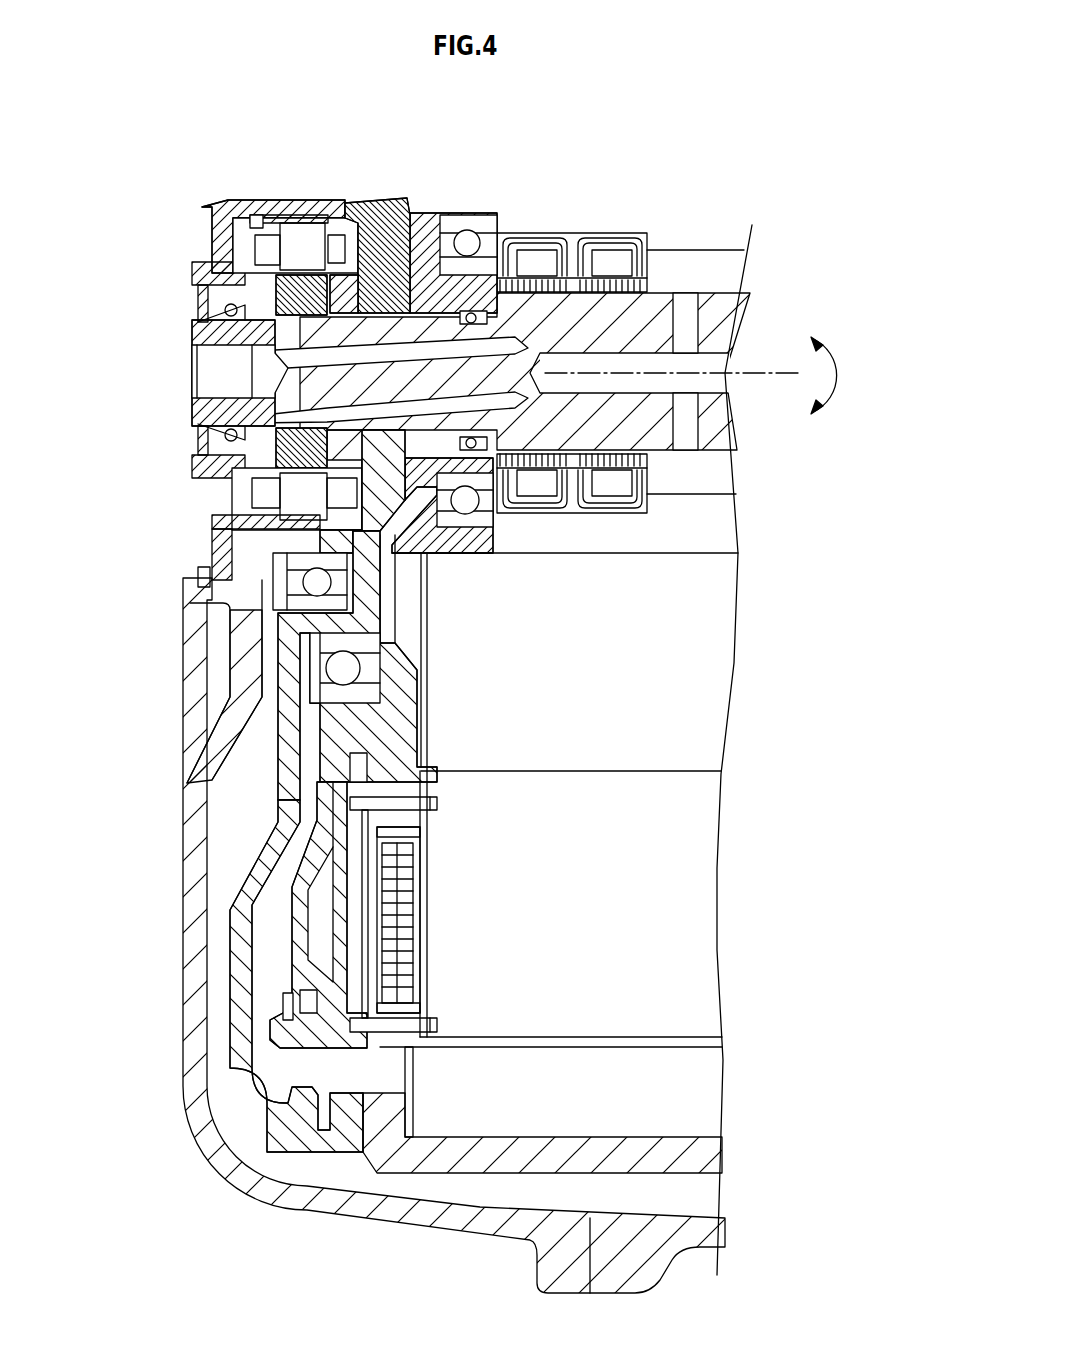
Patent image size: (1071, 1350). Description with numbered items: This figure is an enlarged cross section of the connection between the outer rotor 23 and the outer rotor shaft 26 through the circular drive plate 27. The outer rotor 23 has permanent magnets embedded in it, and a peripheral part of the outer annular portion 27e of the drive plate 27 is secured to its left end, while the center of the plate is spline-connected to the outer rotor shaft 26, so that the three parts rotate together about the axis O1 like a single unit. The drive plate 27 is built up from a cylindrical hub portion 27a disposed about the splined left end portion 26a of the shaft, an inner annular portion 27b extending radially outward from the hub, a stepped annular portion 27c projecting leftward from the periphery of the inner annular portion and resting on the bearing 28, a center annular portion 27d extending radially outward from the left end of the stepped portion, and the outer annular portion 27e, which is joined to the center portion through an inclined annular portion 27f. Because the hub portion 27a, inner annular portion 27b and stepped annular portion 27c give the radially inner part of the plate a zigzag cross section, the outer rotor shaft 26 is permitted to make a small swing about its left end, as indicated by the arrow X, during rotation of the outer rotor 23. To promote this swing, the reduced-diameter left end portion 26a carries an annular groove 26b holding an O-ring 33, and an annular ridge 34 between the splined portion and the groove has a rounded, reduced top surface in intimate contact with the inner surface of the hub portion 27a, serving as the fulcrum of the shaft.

The outer rotor 23 is at (450, 1120).
The outer rotor shaft 26 is at (189, 340).
The splined left end portion 26a is at (392, 308).
The annular groove 26b is at (472, 314).
The circular drive plate 27 is at (344, 791).
The cylindrical hub portion 27a is at (480, 512).
The inner annular portion 27b is at (374, 572).
The stepped annular portion 27c is at (344, 628).
The center annular portion 27d is at (291, 763).
The outer annular portion 27e is at (231, 966).
The inclined annular portion 27f is at (324, 866).
The bearing 28 is at (294, 603).
The O-ring 33 is at (588, 298).
The annular ridge 34 is at (470, 450).
The axis O1 is at (754, 370).
The arrow X is at (842, 372).